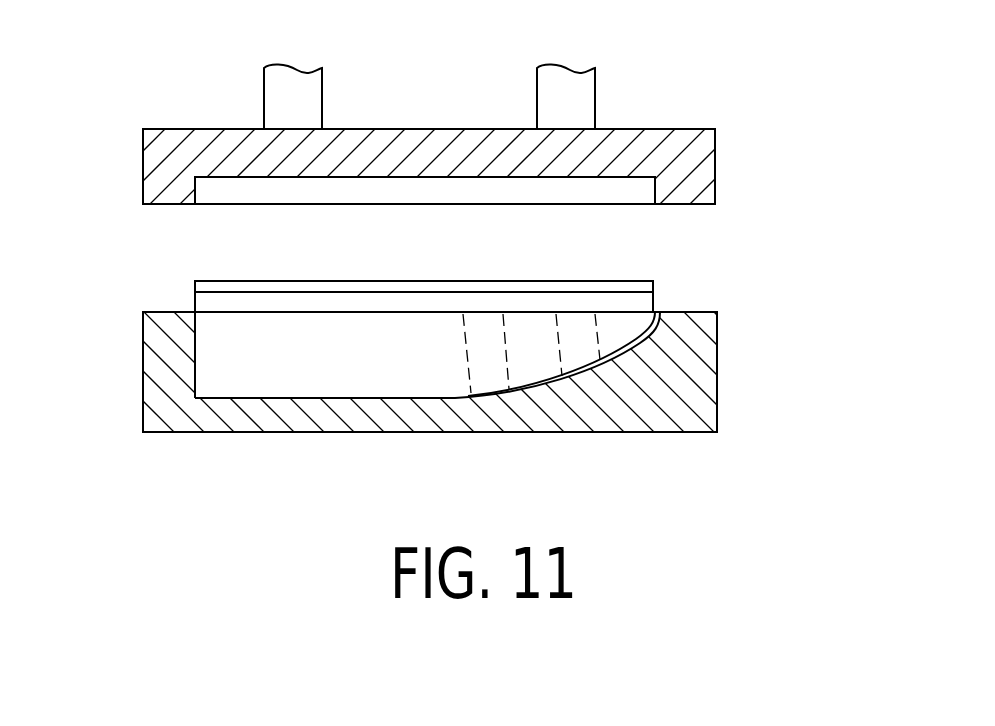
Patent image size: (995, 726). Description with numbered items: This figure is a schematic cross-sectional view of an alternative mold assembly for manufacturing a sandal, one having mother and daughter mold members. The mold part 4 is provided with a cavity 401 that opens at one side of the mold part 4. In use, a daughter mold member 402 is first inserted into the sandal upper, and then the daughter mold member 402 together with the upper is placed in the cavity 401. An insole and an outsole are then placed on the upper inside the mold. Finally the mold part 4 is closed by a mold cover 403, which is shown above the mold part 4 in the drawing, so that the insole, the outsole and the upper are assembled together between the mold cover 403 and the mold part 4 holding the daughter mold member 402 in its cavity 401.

The mold part 4 is at (745, 394).
The cavity 401 is at (195, 372).
The daughter mold member 402 is at (323, 365).
The mold cover 403 is at (702, 148).